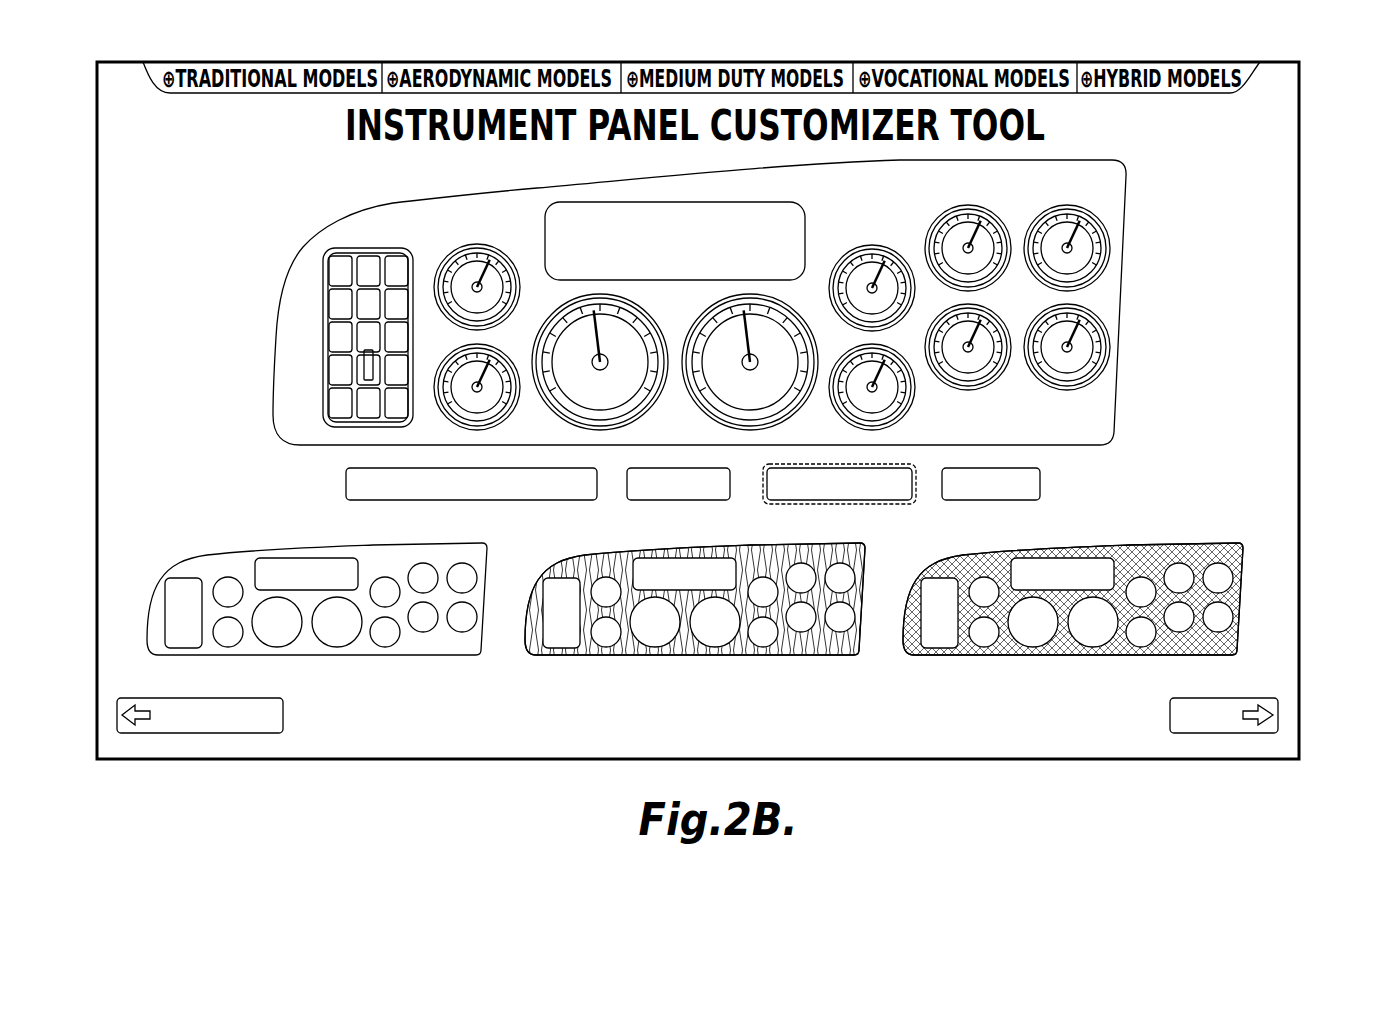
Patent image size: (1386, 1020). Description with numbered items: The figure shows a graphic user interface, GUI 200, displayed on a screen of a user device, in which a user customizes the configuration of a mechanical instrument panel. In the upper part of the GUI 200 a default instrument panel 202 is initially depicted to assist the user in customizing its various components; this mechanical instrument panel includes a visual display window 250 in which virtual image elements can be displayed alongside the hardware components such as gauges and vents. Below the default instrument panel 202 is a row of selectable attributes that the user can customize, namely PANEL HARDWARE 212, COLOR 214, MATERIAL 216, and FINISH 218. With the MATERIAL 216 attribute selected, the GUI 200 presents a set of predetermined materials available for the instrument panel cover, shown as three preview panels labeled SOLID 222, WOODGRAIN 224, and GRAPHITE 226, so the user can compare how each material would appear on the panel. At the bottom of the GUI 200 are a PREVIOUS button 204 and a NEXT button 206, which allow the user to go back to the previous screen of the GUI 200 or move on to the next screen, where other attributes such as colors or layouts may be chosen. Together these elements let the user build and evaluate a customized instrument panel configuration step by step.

The GUI 200 is at (1299, 178).
The default instrument panel 202 is at (742, 298).
The visual display window 250 is at (600, 215).
The PANEL HARDWARE 212 is at (470, 500).
The COLOR 214 is at (682, 500).
The MATERIAL 216 is at (855, 500).
The FINISH 218 is at (1012, 500).
The SOLID 222 is at (208, 655).
The WOODGRAIN 224 is at (812, 652).
The GRAPHITE 226 is at (1215, 652).
The PREVIOUS button 204 is at (117, 712).
The NEXT button 206 is at (1278, 710).